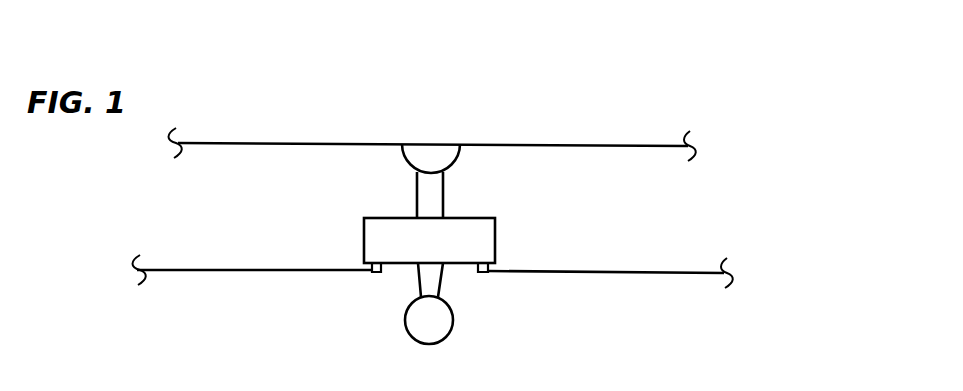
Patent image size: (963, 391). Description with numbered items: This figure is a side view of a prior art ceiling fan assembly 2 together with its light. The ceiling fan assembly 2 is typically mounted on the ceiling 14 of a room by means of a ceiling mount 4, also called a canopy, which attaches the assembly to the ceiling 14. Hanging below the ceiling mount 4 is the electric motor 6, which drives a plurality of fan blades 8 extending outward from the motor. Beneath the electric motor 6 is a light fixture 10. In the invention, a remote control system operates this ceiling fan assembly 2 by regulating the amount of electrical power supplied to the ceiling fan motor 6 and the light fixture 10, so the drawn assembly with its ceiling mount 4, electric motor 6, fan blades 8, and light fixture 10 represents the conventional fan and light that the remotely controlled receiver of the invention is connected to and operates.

The ceiling fan assembly 2 is at (714, 205).
The ceiling mount 4 is at (443, 156).
The electric motor 6 is at (382, 236).
The fan blades 8 is at (602, 273).
The light fixture 10 is at (432, 280).
The ceiling 14 is at (583, 146).